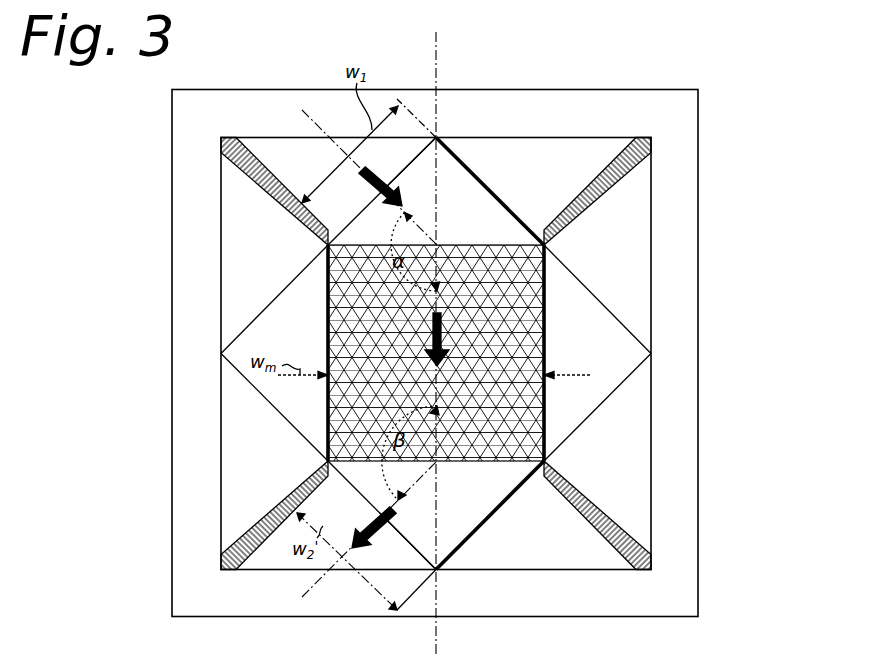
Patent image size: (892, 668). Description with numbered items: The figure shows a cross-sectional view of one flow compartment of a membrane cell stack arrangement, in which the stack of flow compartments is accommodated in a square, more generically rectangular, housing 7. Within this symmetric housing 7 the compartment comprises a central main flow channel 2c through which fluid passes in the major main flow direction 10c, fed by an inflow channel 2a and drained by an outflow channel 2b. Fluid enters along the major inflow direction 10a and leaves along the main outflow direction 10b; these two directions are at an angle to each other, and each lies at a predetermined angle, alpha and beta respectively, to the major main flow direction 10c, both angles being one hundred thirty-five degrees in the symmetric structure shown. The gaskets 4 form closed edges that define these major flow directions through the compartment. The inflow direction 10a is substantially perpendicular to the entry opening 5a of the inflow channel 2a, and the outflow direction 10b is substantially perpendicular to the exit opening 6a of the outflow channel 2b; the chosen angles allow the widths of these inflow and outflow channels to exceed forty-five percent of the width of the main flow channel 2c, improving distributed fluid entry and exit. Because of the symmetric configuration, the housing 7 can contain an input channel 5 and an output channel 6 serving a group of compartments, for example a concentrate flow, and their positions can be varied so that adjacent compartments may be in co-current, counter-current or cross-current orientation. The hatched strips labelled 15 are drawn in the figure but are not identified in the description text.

The inflow channel 2a is at (368, 230).
The outflow channel 2b is at (355, 473).
The main flow channel 2c is at (513, 413).
The gasket 4 is at (545, 293).
The input channel 5 is at (272, 150).
The entry opening 5a is at (418, 153).
The output channel 6 is at (273, 550).
The exit opening 6a is at (420, 556).
The housing 7 is at (588, 115).
The major inflow direction 10a is at (405, 195).
The main outflow direction 10b is at (353, 537).
The major main flow direction 10c is at (545, 338).
The sealing strip 15 is at (270, 187).